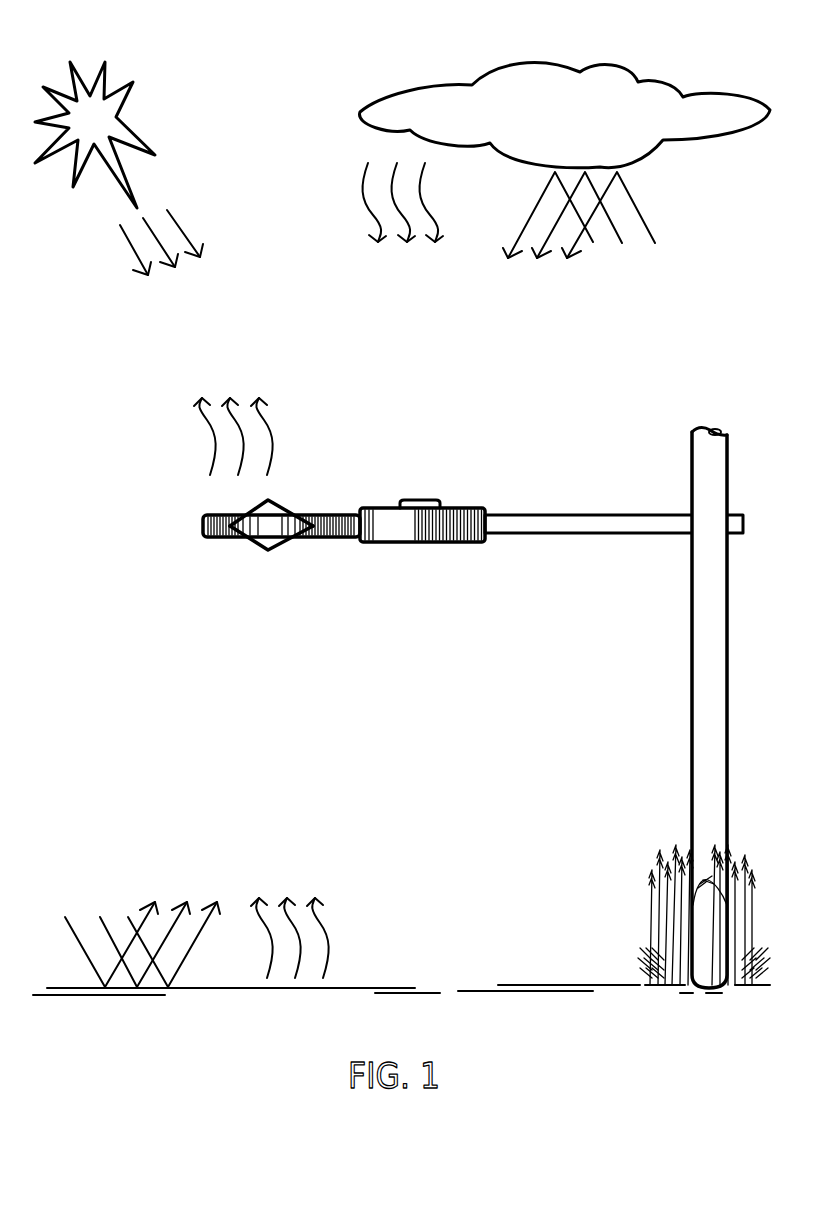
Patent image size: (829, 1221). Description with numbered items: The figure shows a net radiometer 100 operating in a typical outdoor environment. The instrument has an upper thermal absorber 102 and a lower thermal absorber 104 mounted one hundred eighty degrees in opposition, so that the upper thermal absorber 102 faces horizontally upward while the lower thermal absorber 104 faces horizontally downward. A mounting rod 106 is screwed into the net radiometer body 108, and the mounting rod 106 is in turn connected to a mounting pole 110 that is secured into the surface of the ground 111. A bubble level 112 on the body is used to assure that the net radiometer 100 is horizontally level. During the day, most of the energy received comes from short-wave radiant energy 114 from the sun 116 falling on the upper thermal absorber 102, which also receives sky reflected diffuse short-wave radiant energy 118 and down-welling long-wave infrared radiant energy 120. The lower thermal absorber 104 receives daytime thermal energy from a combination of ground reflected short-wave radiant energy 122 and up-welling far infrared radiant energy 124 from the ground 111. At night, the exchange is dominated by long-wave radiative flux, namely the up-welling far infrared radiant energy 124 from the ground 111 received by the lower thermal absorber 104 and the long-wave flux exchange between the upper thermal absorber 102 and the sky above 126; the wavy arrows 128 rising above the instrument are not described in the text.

The net radiometer 100 is at (253, 525).
The upper thermal absorber 102 is at (293, 508).
The lower thermal absorber 104 is at (248, 540).
The mounting rod 106 is at (565, 513).
The net radiometer body 108 is at (378, 505).
The mounting pole 110 is at (688, 698).
The ground 111 is at (401, 1001).
The bubble level 112 is at (428, 498).
The short-wave radiant energy 114 is at (142, 244).
The sun 116 is at (95, 139).
The sky reflected diffuse short-wave radiant energy 118 is at (592, 215).
The down-welling long-wave infrared radiant energy 120 is at (381, 202).
The ground reflected short-wave radiant energy 122 is at (129, 944).
The up-welling far infrared radiant energy 124 is at (276, 938).
The sky 126 is at (512, 115).
The heat dissipation 128 is at (220, 436).